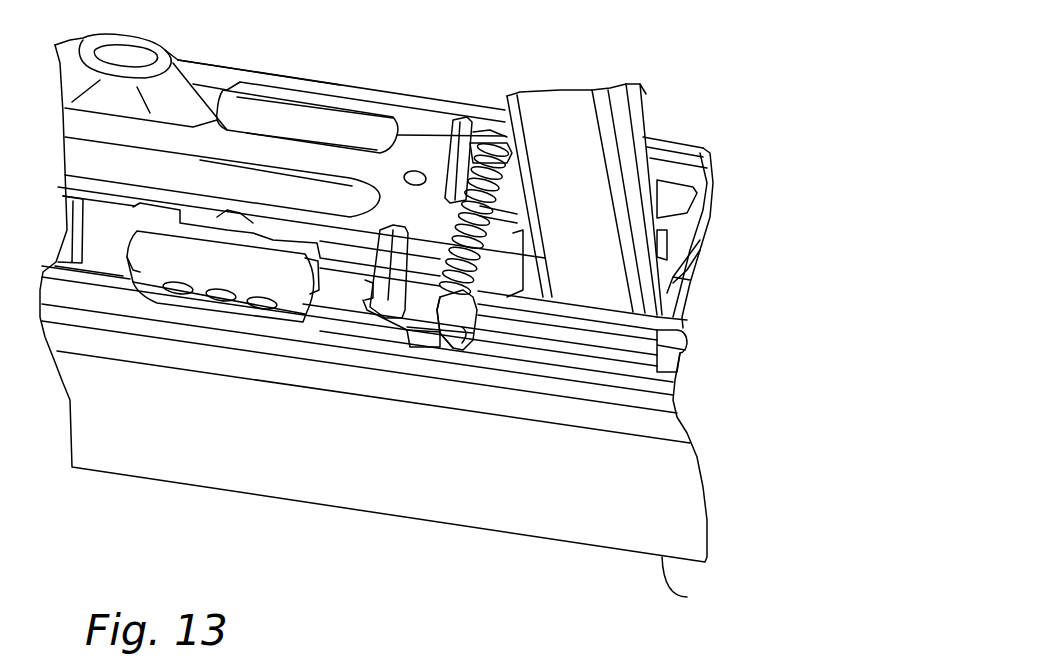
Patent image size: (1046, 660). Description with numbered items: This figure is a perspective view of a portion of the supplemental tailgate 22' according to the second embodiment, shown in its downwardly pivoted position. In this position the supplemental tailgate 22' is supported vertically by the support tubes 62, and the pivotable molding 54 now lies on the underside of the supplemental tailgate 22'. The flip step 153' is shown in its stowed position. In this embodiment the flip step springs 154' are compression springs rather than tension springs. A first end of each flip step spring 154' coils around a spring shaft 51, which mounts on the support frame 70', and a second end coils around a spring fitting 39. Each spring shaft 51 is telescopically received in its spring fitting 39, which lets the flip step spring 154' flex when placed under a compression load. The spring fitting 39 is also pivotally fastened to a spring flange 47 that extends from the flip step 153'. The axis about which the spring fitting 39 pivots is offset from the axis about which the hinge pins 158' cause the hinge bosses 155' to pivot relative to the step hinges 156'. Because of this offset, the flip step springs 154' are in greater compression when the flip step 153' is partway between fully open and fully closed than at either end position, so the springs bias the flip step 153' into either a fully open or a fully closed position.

The supplemental tailgate 22' is at (417, 298).
The flip step 153' is at (262, 58).
The flip step spring 154' is at (435, 133).
The hinge boss 155' is at (284, 416).
The step hinge 156' is at (402, 431).
The hinge pin 158' is at (382, 401).
The spring shaft 51 is at (483, 140).
The support tube 62 is at (645, 113).
The support frame 70' is at (709, 211).
The spring flange 47 is at (430, 303).
The spring fitting 39 is at (464, 347).
The pivotable molding 54 is at (687, 597).